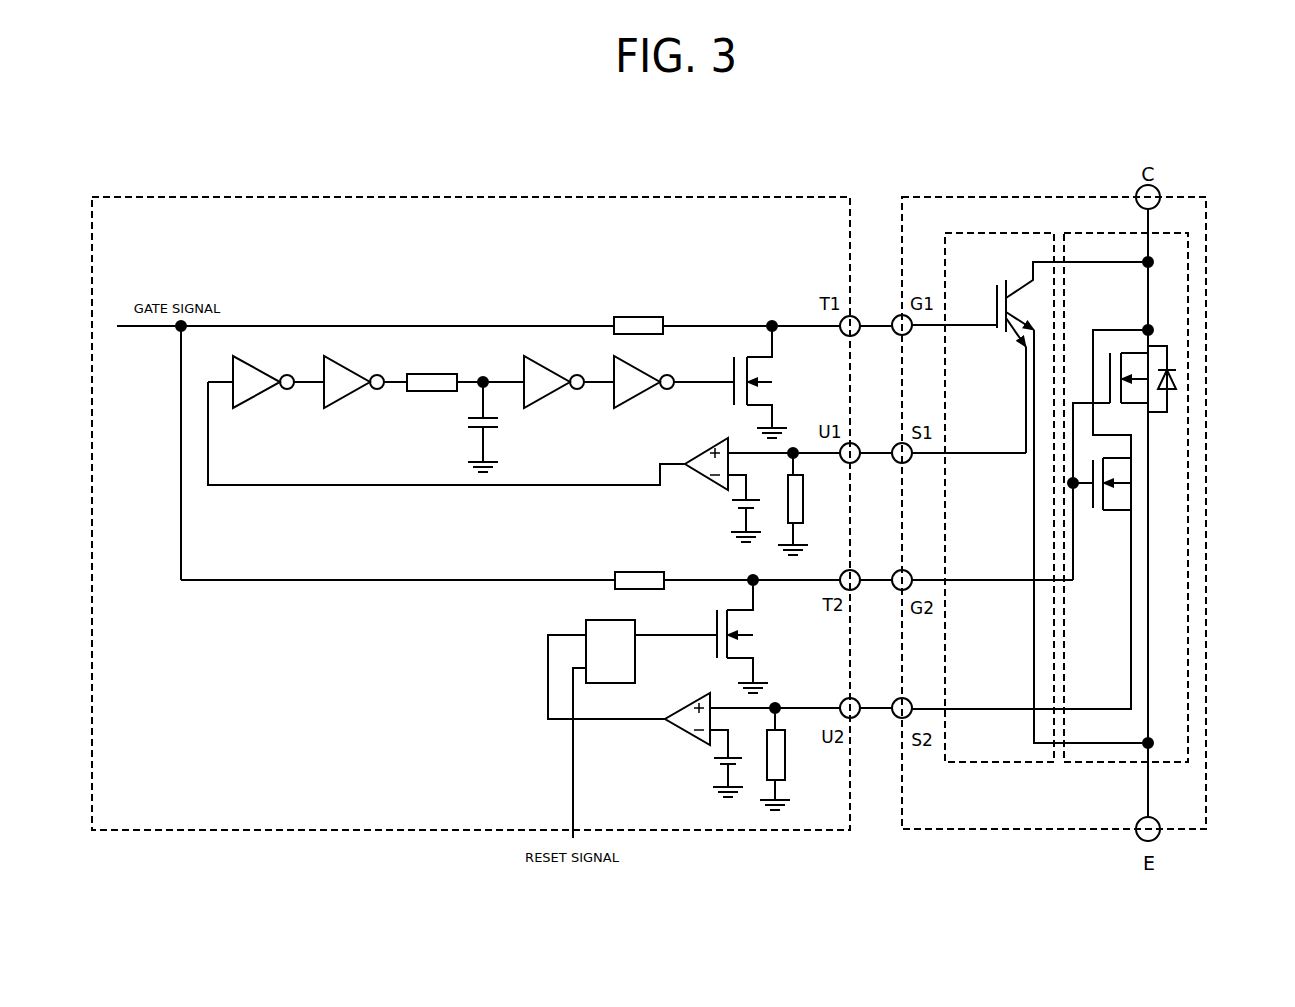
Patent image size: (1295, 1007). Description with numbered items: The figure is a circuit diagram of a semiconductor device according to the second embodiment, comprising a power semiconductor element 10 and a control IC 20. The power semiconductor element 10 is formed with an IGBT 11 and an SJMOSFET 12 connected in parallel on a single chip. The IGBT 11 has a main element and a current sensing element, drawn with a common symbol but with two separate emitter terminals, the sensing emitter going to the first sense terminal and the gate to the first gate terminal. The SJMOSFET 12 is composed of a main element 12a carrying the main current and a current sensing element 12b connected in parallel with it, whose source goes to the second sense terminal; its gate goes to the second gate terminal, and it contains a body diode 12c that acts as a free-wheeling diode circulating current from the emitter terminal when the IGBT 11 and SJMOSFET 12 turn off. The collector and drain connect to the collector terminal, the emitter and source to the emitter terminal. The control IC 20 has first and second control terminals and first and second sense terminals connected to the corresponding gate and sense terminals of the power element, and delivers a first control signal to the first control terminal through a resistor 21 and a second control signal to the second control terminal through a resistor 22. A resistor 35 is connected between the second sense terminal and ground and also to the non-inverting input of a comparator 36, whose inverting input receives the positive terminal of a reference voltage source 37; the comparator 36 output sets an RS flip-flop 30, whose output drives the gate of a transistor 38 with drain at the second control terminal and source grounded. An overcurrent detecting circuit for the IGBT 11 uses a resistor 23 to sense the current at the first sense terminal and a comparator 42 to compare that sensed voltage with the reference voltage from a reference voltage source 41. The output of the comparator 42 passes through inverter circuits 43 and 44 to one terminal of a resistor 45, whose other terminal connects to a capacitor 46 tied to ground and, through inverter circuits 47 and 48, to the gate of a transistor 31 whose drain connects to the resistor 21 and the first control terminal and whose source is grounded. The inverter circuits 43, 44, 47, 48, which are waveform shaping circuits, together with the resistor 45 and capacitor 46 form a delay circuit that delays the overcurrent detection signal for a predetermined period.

The power semiconductor element 10 is at (943, 197).
The IGBT 11 is at (1027, 233).
The SJMOSFET 12 is at (1107, 233).
The main element 12a is at (1118, 340).
The current sensing element 12b is at (1131, 462).
The body diode 12c is at (1178, 372).
The control IC 20 is at (517, 197).
The resistor 21 is at (637, 317).
The resistor 22 is at (637, 572).
The resistor 23 is at (804, 503).
The RS flip-flop 30 is at (590, 620).
The transistor 31 is at (777, 385).
The resistor 35 is at (786, 762).
The comparator 36 is at (677, 705).
The reference voltage source 37 is at (714, 759).
The transistor 38 is at (757, 636).
The reference voltage source 41 is at (732, 504).
The comparator 42 is at (700, 451).
The inverter circuit 43 is at (264, 371).
The inverter circuit 44 is at (353, 371).
The resistor 45 is at (425, 374).
The capacitor 46 is at (500, 423).
The inverter circuit 47 is at (553, 371).
The inverter circuit 48 is at (643, 371).